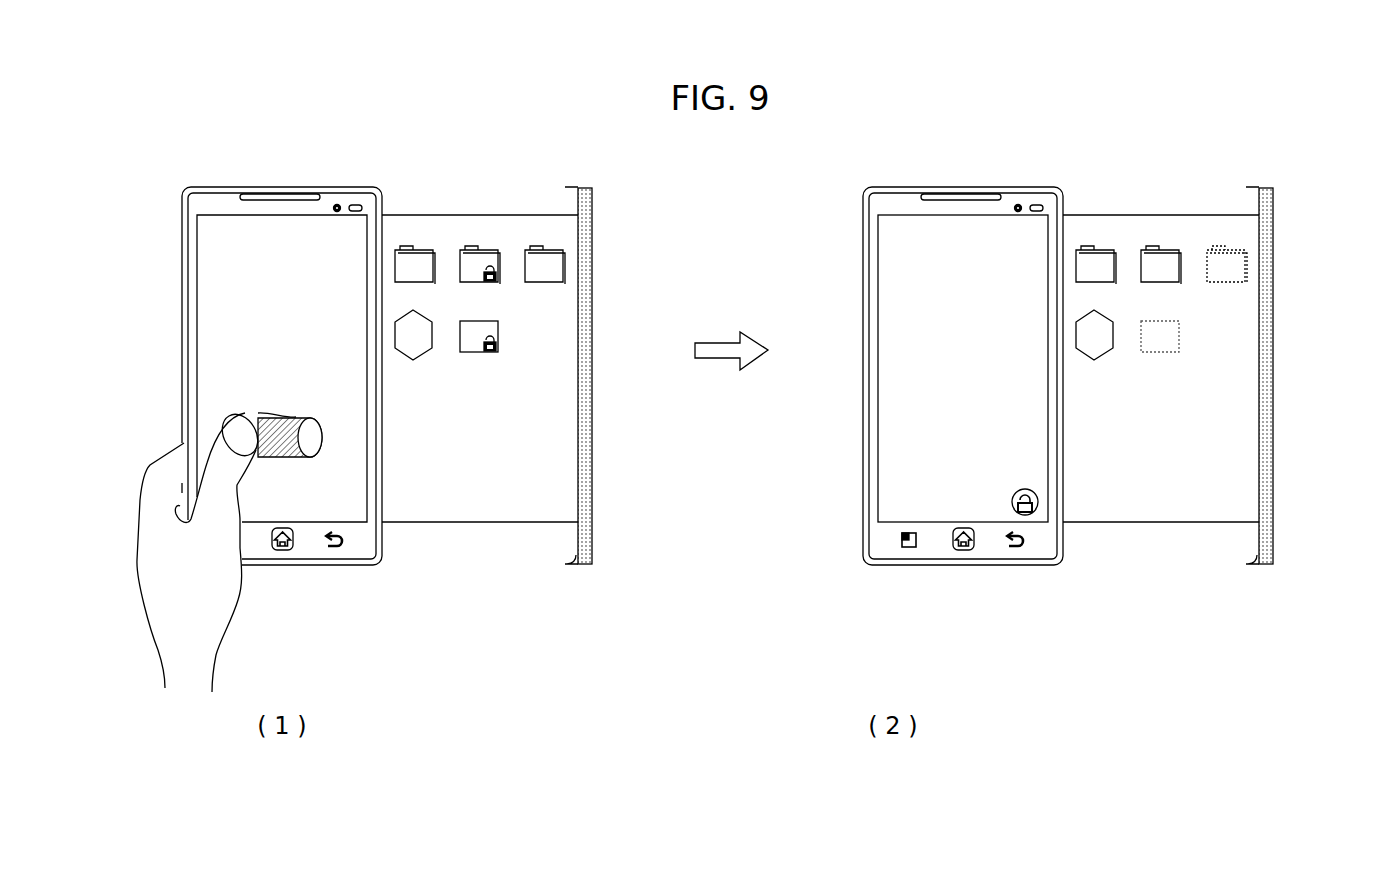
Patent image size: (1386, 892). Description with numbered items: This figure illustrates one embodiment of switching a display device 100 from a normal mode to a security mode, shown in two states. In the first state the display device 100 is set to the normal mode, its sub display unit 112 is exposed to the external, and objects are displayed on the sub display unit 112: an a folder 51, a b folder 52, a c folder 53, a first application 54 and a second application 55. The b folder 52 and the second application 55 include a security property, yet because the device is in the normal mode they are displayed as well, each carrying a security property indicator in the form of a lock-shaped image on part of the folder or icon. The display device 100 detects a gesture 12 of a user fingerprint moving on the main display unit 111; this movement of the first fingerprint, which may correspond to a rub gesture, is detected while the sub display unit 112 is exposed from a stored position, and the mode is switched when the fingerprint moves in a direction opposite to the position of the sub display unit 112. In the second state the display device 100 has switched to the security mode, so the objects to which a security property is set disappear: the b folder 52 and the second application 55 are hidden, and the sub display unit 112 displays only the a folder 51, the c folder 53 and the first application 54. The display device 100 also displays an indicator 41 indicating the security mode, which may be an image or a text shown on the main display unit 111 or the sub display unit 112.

The display device 100 is at (361, 187).
The main display unit 111 is at (205, 271).
The sub display unit 112 is at (565, 396).
The gesture 12 is at (210, 414).
The a folder 51 is at (416, 240).
The b folder 52 is at (479, 240).
The c folder 53 is at (546, 240).
The first application 54 is at (415, 392).
The second application 55 is at (483, 392).
The indicator 41 is at (1031, 514).